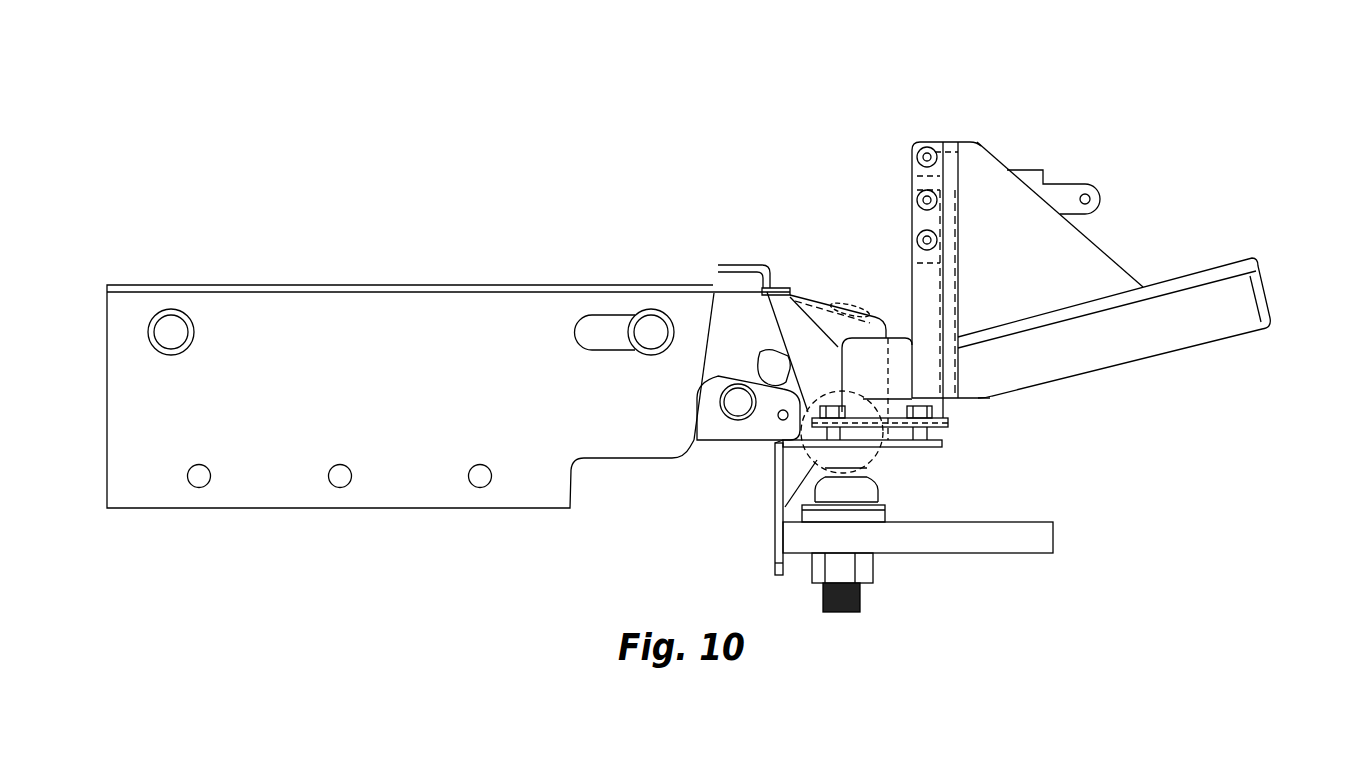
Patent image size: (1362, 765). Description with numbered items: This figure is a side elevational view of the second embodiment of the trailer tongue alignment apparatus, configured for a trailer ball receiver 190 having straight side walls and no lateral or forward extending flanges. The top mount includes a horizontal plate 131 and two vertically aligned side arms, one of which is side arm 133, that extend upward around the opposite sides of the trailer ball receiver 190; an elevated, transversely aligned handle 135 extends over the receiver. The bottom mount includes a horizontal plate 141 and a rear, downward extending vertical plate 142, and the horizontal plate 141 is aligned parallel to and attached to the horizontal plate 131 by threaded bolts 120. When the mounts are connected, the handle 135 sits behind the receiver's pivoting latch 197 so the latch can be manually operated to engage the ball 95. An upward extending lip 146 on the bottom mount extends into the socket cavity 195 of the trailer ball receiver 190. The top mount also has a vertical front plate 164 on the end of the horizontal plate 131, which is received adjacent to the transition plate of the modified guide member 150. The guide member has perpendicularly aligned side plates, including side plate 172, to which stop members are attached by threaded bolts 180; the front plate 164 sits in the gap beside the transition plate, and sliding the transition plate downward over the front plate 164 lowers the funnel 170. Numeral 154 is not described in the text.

The trailer ball receiver 190 is at (845, 163).
The side plate 172 is at (912, 150).
The modified guide member 150 is at (1000, 127).
The gusset plate 154 is at (992, 193).
The funnel 170 is at (1283, 263).
The handle 135 is at (728, 265).
The pivoting latch 197 is at (812, 293).
The threaded bolts 180 is at (913, 170).
The vertical front plate 164 is at (952, 237).
The threaded bolts 120 is at (838, 404).
The horizontal plate 131 is at (947, 419).
The horizontal plate 141 is at (927, 452).
The upward extending lip 146 is at (872, 437).
The side arm 133 is at (782, 322).
The socket cavity 195 is at (771, 361).
The ball 95 is at (803, 457).
The vertical plate 142 is at (773, 545).